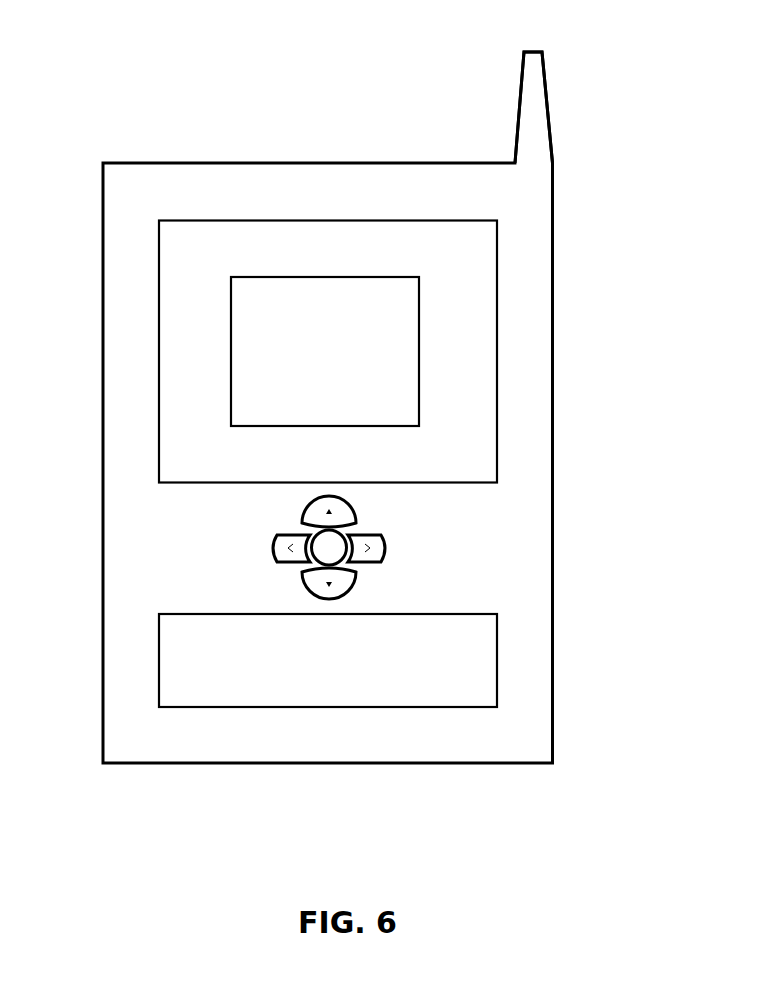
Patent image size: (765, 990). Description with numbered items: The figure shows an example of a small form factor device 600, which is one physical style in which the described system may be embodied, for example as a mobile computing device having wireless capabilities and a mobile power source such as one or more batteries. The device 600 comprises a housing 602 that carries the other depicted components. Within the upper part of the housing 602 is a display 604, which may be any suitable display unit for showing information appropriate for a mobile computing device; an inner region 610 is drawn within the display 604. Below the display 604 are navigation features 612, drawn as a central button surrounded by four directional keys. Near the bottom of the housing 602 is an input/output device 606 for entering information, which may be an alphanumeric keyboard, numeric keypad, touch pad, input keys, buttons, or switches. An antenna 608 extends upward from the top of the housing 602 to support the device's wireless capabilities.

The small form factor device 600 is at (116, 62).
The housing 602 is at (553, 463).
The display 604 is at (498, 238).
The input/output (I/O) device 606 is at (498, 650).
The antenna 608 is at (515, 100).
The display window 610 is at (419, 368).
The navigation features 612 is at (408, 532).